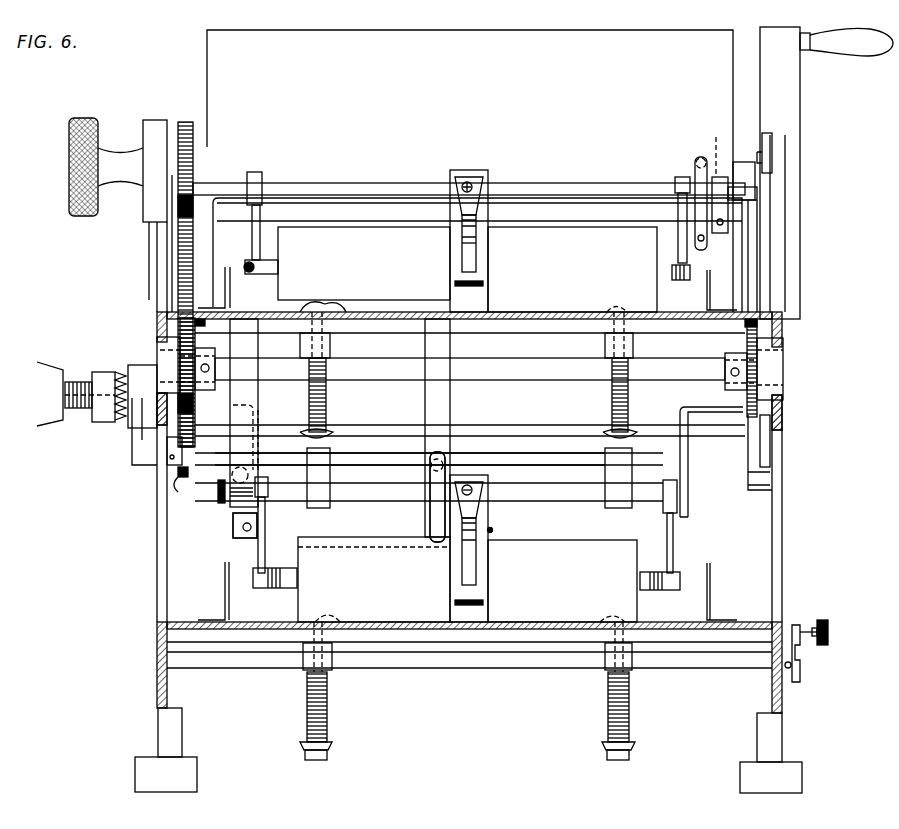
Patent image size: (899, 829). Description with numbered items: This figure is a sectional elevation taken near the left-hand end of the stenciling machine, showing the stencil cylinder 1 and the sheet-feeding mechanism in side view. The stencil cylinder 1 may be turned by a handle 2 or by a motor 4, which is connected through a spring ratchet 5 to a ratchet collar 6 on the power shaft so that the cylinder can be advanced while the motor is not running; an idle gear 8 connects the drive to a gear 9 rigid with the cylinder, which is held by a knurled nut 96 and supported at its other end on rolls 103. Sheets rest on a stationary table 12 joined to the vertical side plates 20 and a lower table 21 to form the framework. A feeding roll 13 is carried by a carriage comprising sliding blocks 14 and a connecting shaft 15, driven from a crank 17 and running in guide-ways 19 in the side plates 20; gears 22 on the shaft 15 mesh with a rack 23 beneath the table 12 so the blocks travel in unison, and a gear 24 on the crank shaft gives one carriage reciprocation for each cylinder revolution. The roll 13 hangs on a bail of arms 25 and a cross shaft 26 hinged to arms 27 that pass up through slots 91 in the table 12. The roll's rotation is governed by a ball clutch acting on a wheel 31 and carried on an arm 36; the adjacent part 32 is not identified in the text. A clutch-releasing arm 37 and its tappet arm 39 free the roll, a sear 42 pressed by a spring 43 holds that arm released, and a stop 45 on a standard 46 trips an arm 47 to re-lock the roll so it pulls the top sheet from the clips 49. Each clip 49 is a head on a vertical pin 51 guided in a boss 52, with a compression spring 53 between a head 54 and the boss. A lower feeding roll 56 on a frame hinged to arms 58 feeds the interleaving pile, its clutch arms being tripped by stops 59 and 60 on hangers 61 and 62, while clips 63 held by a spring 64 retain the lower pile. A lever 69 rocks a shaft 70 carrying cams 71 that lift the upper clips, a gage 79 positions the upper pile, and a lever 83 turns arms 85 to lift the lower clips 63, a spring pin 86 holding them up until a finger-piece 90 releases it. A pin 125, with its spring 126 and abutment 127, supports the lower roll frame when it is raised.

The stencil cylinder 1 is at (470, 171).
The handle 2 is at (846, 42).
The motor 4 is at (50, 345).
The spring ratchet 5 is at (103, 360).
The ratchet collar 6 is at (128, 360).
The idle gear 8 is at (190, 304).
The gear 9 is at (181, 122).
The stationary table 12 is at (410, 312).
The feeding roll 13 is at (467, 269).
The sliding blocks 14 is at (160, 345).
The connecting shaft 15 is at (470, 369).
The crank 17 is at (772, 442).
The guide-ways 19 is at (158, 395).
The vertical side plates 20 is at (157, 540).
The lower table 21 is at (406, 622).
The gear 22 is at (468, 382).
The rack 23 is at (745, 323).
The gear 24 is at (187, 484).
The arms 25 is at (252, 229).
The cross arm or shaft 26 is at (377, 183).
The arms 27 is at (176, 246).
The wheel 31 is at (470, 258).
The bolt 32 is at (682, 280).
The arm 36 is at (488, 180).
The arm 37 is at (472, 234).
The tappet arm 39 is at (698, 156).
The latch or sear 42 is at (462, 218).
The spring 43 is at (462, 185).
The projection or stop 45 is at (740, 162).
The standard 46 is at (745, 259).
The arm 47 is at (212, 546).
The clips 49 is at (322, 291).
The vertical pin 51 is at (608, 330).
The boss 52 is at (330, 345).
The compression spring 53 is at (326, 398).
The head 54 is at (327, 415).
The feeding roll 56 is at (467, 579).
The arms 58 is at (258, 557).
The stop 59 is at (430, 471).
The stop 60 is at (232, 475).
The hanger 61 is at (445, 400).
The hanger 62 is at (244, 413).
The clips 63 is at (312, 618).
The spring 64 is at (327, 696).
The lever 69 is at (132, 444).
The rock shaft 70 is at (560, 466).
The cams 71 is at (605, 477).
The gage 79 is at (226, 291).
The handle or lever 83 is at (800, 660).
The arms 85 is at (327, 756).
The spring pin 86 is at (806, 626).
The finger-piece 90 is at (828, 628).
The slots 91 is at (160, 314).
The knurled nut 96 is at (118, 170).
The rolls 103 is at (768, 140).
The pin 125 is at (268, 495).
The spring 126 is at (235, 515).
The abutment 127 is at (224, 500).